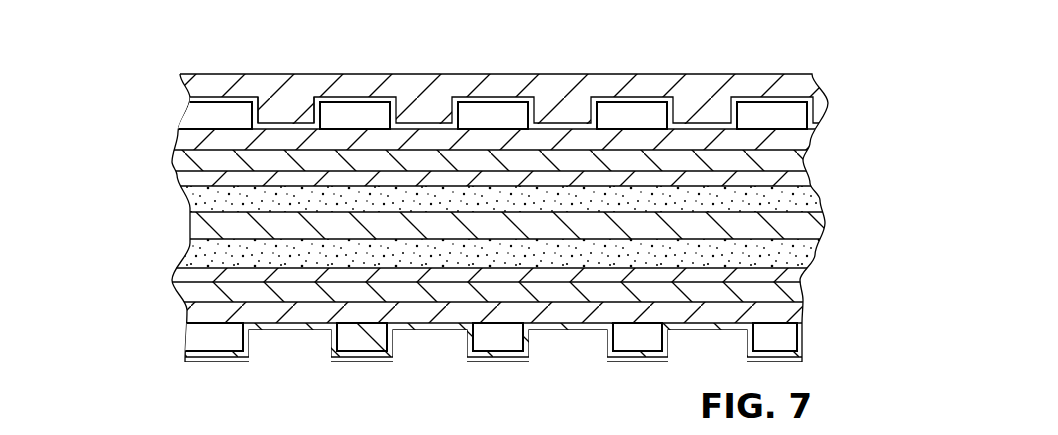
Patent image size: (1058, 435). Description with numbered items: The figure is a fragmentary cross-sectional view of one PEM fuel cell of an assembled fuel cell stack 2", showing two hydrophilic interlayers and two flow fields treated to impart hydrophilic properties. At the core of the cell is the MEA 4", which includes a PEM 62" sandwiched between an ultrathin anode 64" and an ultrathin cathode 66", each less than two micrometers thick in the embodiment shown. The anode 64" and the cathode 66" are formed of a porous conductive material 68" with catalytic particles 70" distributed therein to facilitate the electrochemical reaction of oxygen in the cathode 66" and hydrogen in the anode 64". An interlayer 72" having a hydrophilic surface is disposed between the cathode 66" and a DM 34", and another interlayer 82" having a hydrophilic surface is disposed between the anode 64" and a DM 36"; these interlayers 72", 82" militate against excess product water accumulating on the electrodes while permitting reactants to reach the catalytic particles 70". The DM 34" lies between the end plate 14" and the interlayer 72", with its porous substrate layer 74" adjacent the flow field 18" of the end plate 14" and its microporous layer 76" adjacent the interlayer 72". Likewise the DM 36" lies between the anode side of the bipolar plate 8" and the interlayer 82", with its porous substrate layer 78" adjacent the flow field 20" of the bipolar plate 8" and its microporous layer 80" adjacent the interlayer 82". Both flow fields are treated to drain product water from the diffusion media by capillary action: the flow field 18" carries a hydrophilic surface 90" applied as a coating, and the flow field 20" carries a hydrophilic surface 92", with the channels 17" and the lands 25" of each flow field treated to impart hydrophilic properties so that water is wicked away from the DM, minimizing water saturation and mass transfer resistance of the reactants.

The fuel cell stack 2 is at (487, 212).
The hydrophilic surface 90 is at (216, 105).
The porous conductive material 68 is at (262, 196).
The catalytic particles 70 is at (308, 192).
The channels 17 is at (353, 110).
The lands 25 is at (442, 113).
The flow field 18 is at (622, 95).
The end plate 14 is at (470, 212).
The DM 34 is at (492, 144).
The MEA 4 is at (492, 225).
The porous substrate layer 74 is at (810, 142).
The microporous layer 76 is at (804, 160).
The interlayer 72 is at (808, 176).
The cathode 66 is at (816, 194).
The PEM 62 is at (825, 226).
The anode 64 is at (815, 256).
The interlayer 82 is at (803, 276).
The microporous layer 80 is at (805, 298).
The porous substrate layer 78 is at (804, 320).
The DM 36 is at (497, 312).
The bipolar plate 8 is at (481, 366).
The hydrophilic surface 92 is at (216, 347).
The flow field 20 is at (478, 362).